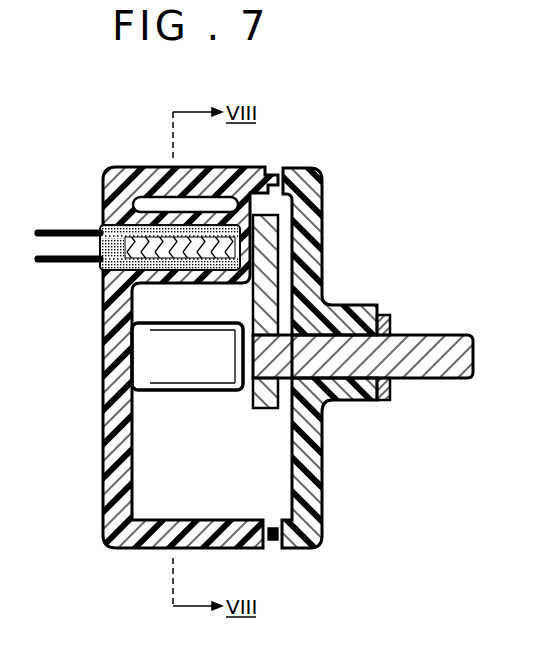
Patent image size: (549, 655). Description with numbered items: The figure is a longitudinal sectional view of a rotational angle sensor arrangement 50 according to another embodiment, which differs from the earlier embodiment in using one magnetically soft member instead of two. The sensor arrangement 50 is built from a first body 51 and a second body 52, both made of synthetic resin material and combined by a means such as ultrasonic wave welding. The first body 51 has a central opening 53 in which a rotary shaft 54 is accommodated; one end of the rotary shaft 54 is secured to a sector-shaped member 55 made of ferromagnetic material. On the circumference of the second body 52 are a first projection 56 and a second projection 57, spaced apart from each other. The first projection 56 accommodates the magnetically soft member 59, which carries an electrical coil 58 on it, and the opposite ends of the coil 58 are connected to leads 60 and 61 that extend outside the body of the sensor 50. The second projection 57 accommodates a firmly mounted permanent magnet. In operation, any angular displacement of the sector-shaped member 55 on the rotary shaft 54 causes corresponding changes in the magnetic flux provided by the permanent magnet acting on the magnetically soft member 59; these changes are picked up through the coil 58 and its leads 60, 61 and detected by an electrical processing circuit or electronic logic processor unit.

The rotational angle sensor arrangement 50 is at (345, 173).
The first body 51 is at (313, 215).
The second body 52 is at (128, 172).
The central opening 53 is at (352, 338).
The rotary shaft 54 is at (433, 340).
The sector-shaped member 55 is at (262, 288).
The first projection 56 is at (240, 220).
The second projection 57 is at (199, 368).
The electrical coil 58 is at (194, 262).
The magnetically soft member 59 is at (151, 268).
The lead 60 is at (48, 229).
The lead 61 is at (46, 264).